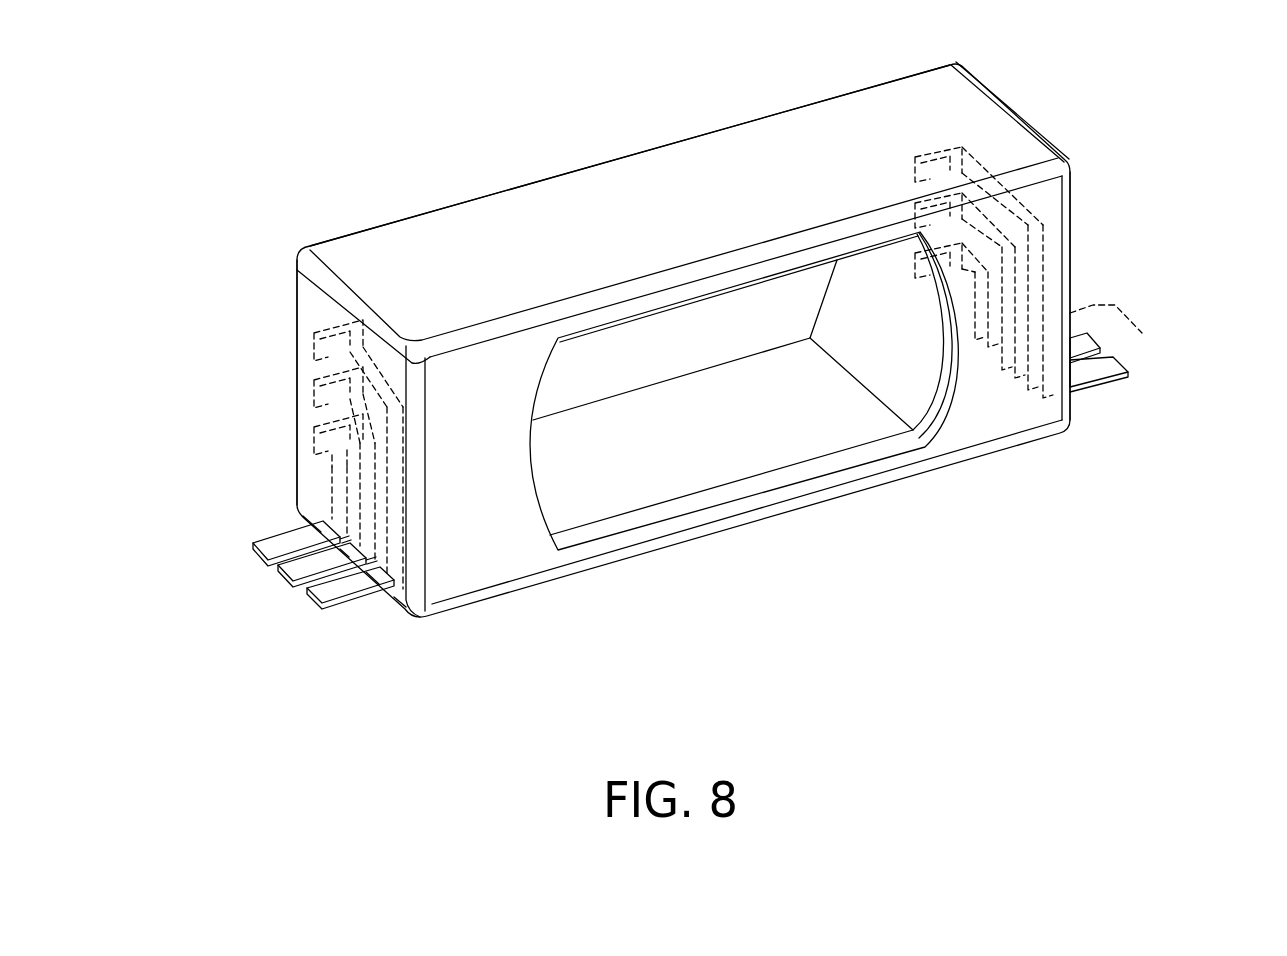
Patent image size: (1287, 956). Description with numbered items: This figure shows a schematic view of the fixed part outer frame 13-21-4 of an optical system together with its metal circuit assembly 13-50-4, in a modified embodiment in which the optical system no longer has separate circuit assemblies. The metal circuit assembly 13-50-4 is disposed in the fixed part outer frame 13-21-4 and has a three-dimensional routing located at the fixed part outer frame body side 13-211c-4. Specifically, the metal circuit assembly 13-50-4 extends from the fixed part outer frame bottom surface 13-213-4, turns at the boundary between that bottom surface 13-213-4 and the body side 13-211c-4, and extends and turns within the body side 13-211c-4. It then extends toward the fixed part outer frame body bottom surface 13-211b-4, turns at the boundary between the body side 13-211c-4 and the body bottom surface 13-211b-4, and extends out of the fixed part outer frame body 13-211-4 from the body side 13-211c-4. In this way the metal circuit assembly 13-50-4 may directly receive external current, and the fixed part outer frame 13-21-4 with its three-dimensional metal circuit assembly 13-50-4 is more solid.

The fixed part outer frame 13-21-4 is at (309, 208).
The fixed part outer frame bottom surface 13-213-4 is at (473, 200).
The fixed part outer frame body 13-211-4 is at (957, 93).
The fixed part outer frame body side 13-211c-4 is at (307, 310).
The fixed part outer frame body bottom surface 13-211b-4 is at (772, 442).
The metal circuit assembly 13-50-4 is at (253, 547).